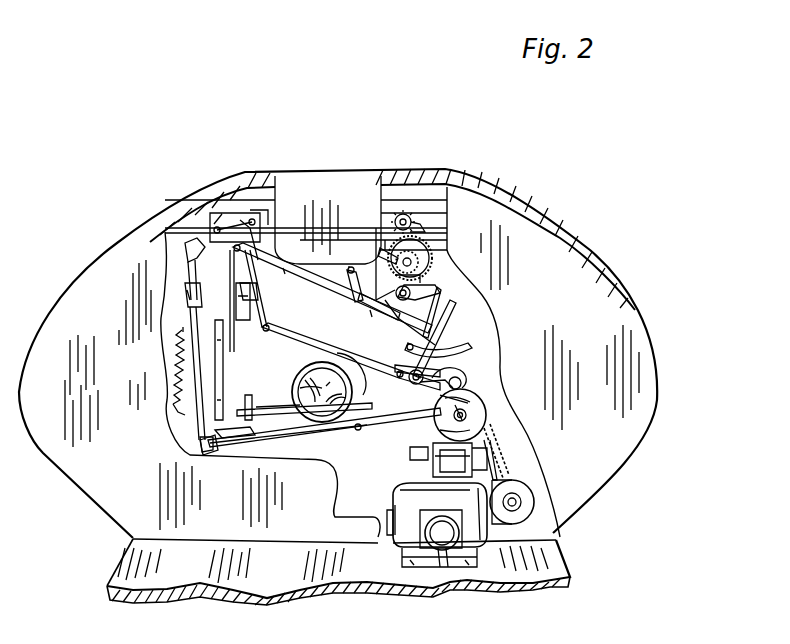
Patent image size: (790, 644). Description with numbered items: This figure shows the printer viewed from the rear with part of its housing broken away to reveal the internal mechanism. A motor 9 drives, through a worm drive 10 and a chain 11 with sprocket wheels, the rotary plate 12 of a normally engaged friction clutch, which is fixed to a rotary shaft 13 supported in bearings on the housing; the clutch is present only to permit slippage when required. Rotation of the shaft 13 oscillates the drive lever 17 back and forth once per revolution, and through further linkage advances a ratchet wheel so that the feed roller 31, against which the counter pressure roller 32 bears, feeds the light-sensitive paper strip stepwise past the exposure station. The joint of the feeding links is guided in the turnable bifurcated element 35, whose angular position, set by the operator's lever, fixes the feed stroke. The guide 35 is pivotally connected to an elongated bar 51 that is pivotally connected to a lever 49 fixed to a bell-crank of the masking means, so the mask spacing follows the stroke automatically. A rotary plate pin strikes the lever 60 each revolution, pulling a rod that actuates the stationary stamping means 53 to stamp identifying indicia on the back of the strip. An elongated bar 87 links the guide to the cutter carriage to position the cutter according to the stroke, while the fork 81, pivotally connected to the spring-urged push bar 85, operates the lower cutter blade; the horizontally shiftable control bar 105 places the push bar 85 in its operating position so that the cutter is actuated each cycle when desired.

The motor 9 is at (396, 540).
The worm drive 10 is at (520, 510).
The chain 11 is at (507, 452).
The rotary plate 12 is at (483, 403).
The rotary shaft 13 is at (454, 417).
The oscillatory drive lever 17 is at (310, 433).
The feed roller 31 is at (433, 240).
The counter pressure roller 32 is at (410, 213).
The bifurcated element (elongated guide) 35 is at (452, 313).
The lever 49 is at (347, 270).
The elongated bar 51 is at (380, 302).
The stamping means 53 is at (247, 212).
The lever 60 is at (290, 333).
The bifurcated element (fork) 81 is at (185, 241).
The push bar 85 is at (198, 370).
The elongated bar 87 is at (313, 290).
The control bar 105 is at (268, 410).